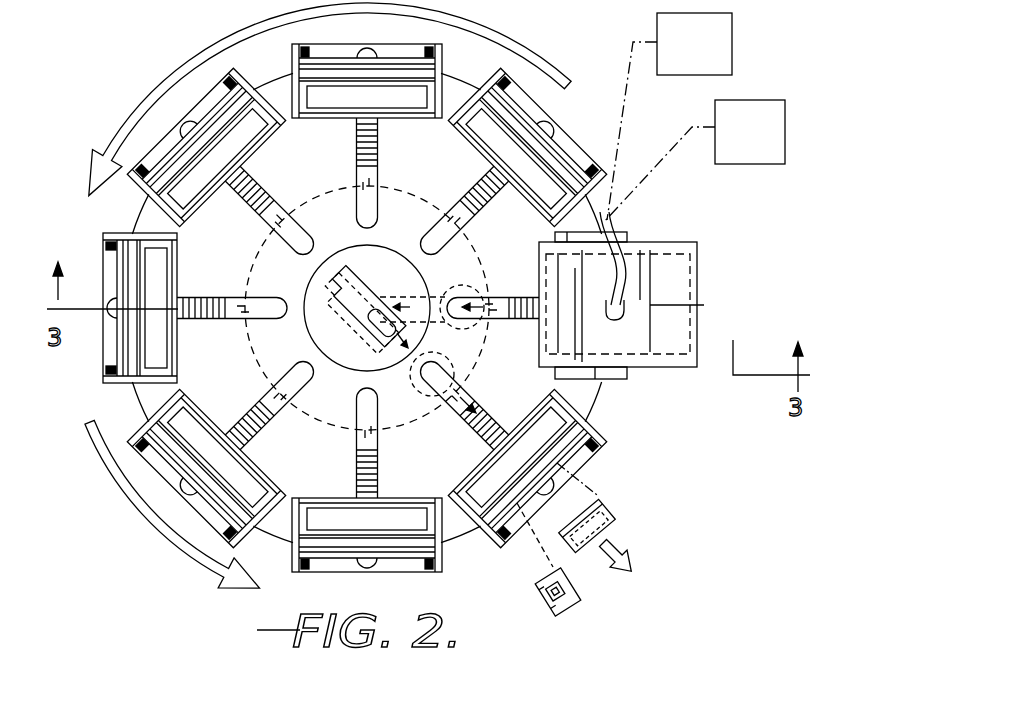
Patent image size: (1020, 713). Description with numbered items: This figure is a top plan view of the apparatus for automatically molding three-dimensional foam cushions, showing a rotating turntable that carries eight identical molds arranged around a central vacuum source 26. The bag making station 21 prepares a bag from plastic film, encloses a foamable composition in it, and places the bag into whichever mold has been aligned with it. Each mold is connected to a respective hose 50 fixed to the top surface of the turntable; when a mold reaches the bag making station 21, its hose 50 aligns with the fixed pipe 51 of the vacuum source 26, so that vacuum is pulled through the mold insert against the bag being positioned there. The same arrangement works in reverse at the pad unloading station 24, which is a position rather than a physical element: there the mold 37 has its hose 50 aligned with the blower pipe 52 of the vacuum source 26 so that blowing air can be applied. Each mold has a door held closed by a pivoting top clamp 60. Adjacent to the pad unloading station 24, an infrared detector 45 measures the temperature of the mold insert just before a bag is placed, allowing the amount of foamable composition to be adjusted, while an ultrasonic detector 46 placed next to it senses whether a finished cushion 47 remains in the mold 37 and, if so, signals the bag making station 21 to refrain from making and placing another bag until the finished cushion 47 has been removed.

The bag making station 21 is at (790, 240).
The pad unloading station 24 is at (778, 469).
The vacuum source 26 is at (343, 287).
The mold 37 is at (598, 430).
The infrared detector 45 is at (551, 582).
The ultrasonic detector 46 is at (548, 606).
The finished cushion 47 is at (597, 508).
The hoses 50 is at (252, 222).
The fixed pipe 51 is at (452, 292).
The blower pipe 52 is at (404, 393).
The top clamp 60 is at (322, 120).